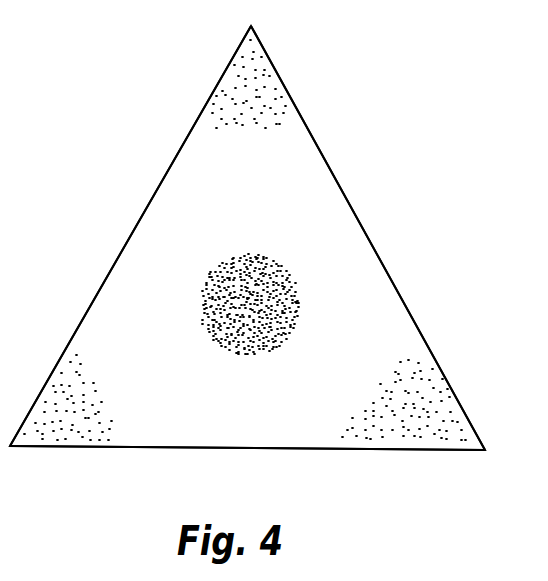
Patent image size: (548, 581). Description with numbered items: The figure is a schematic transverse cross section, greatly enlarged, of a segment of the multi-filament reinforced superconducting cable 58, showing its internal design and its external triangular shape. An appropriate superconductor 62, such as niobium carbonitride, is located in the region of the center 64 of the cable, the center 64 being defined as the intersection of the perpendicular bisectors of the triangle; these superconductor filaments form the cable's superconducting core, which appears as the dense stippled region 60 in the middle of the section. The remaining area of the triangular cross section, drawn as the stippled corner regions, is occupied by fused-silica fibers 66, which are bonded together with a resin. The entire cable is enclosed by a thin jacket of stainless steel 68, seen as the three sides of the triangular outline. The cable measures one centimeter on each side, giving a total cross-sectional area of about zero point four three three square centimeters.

The cable 58 is at (390, 307).
The central deposit region 60 is at (227, 287).
The superconductor 62 is at (260, 260).
The center of the cable 64 is at (248, 298).
The fused-silica fibers 66 is at (252, 80).
The jacket of stainless steel 68 is at (234, 471).